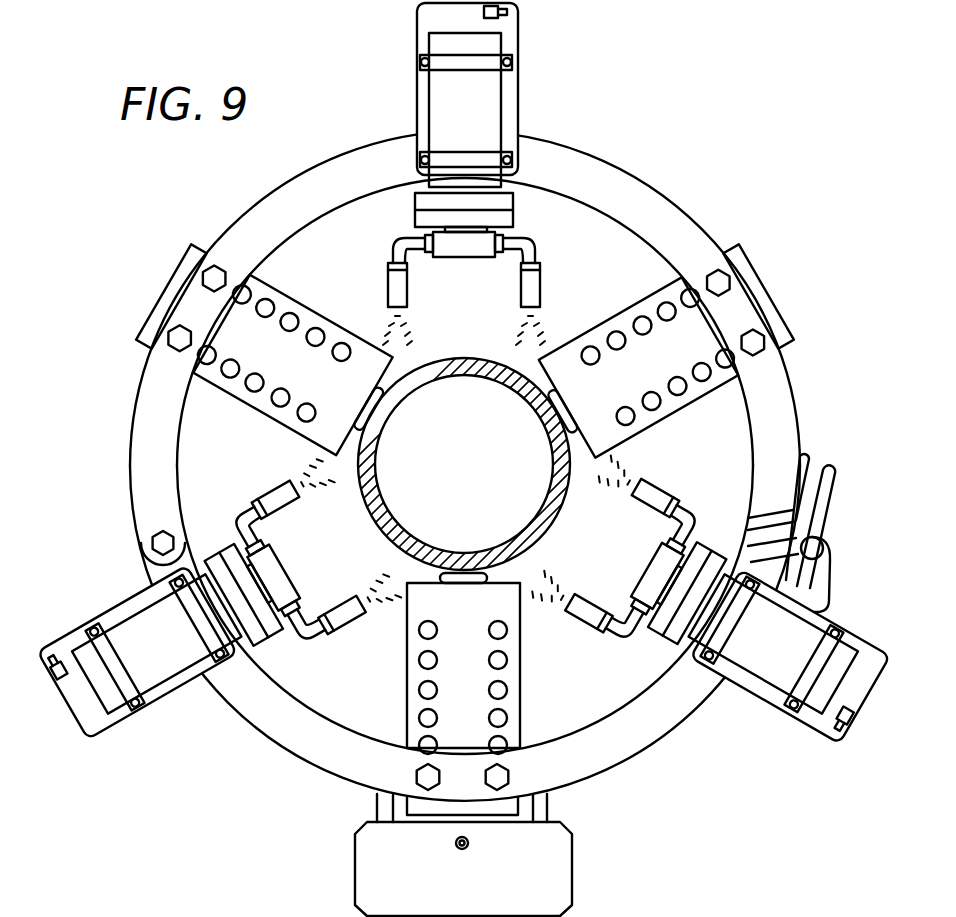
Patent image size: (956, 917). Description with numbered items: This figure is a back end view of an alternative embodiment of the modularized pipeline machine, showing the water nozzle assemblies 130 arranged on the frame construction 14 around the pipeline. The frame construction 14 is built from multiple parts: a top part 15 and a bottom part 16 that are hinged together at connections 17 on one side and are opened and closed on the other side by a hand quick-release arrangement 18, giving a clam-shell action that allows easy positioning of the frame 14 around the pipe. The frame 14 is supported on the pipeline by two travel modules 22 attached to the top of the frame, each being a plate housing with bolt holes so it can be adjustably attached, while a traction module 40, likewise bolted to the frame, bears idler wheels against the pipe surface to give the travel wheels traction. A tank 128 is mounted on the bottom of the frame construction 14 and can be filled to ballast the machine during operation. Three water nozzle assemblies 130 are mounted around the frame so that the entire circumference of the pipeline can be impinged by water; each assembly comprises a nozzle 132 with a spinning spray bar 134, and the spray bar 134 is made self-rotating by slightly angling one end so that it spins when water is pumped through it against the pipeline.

The frame construction 14 is at (488, 466).
The top part 15 is at (640, 187).
The bottom part 16 is at (630, 751).
The connections 17 is at (151, 545).
The hand quick-release arrangement 18 is at (836, 538).
The travel module 22 is at (297, 373).
The traction module 40 is at (522, 660).
The tank 128 is at (489, 902).
The water nozzle assemblies 130 is at (540, 30).
The nozzle 132 is at (503, 97).
The spinning spray bar 134 is at (539, 253).